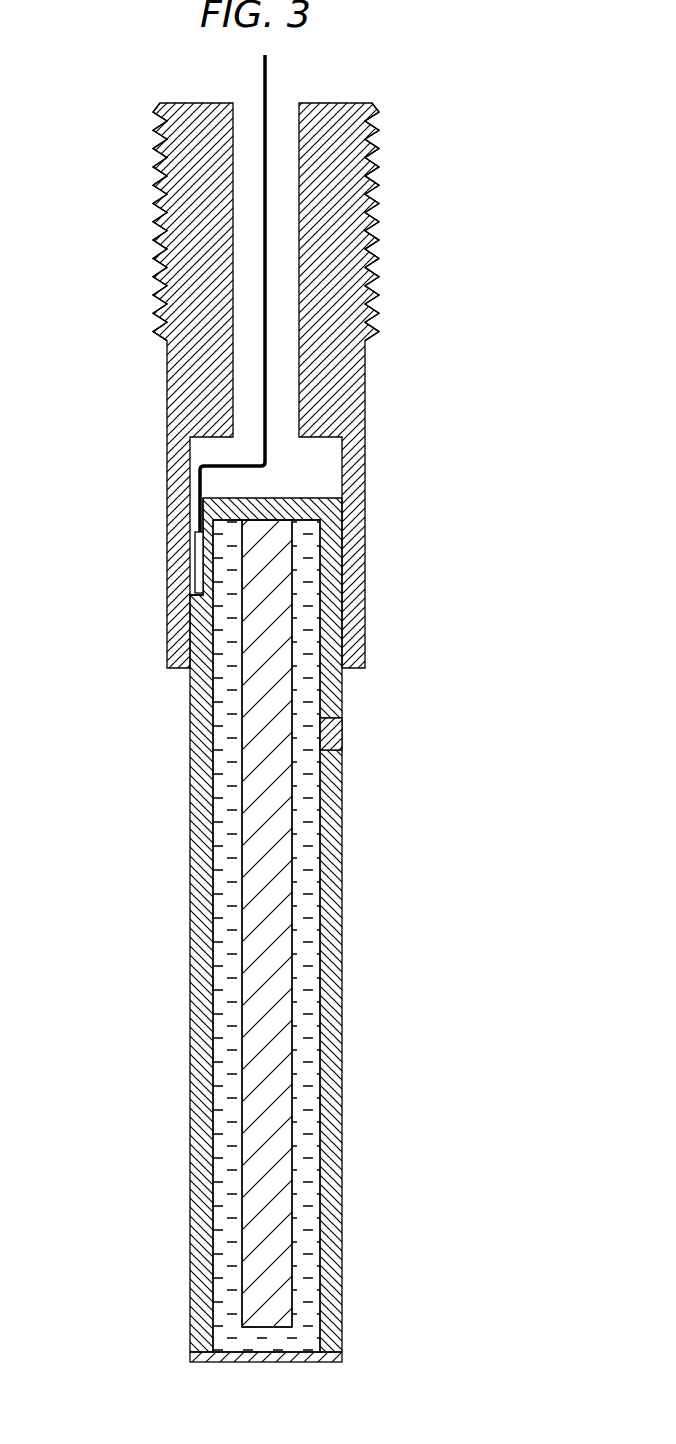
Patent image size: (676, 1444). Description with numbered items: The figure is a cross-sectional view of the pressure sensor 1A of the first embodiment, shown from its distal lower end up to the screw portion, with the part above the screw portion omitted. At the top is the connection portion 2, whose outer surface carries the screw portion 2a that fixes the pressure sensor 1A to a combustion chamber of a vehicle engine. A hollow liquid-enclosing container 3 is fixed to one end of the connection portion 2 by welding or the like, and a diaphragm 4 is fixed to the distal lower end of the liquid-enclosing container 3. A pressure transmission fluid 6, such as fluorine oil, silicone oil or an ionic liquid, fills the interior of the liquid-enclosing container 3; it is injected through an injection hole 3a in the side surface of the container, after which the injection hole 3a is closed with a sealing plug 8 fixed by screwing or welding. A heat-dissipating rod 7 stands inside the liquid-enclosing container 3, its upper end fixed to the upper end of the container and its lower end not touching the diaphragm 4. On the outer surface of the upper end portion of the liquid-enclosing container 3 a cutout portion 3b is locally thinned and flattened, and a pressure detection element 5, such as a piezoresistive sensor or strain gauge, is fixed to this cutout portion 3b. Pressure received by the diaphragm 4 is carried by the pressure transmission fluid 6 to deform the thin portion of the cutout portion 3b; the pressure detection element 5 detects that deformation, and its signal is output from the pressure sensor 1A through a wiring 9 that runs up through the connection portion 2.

The pressure sensor 1A is at (478, 110).
The connection portion 2 is at (365, 385).
The screw portion 2a is at (153, 212).
The liquid-enclosing container 3 is at (191, 850).
The injection hole 3a is at (342, 718).
The cutout portion 3b is at (198, 600).
The diaphragm 4 is at (343, 1356).
The pressure detection element 5 is at (197, 555).
The pressure transmission fluid 6 is at (226, 1045).
The heat-dissipating rod 7 is at (285, 960).
The sealing plug 8 is at (322, 740).
The wiring 9 is at (265, 383).